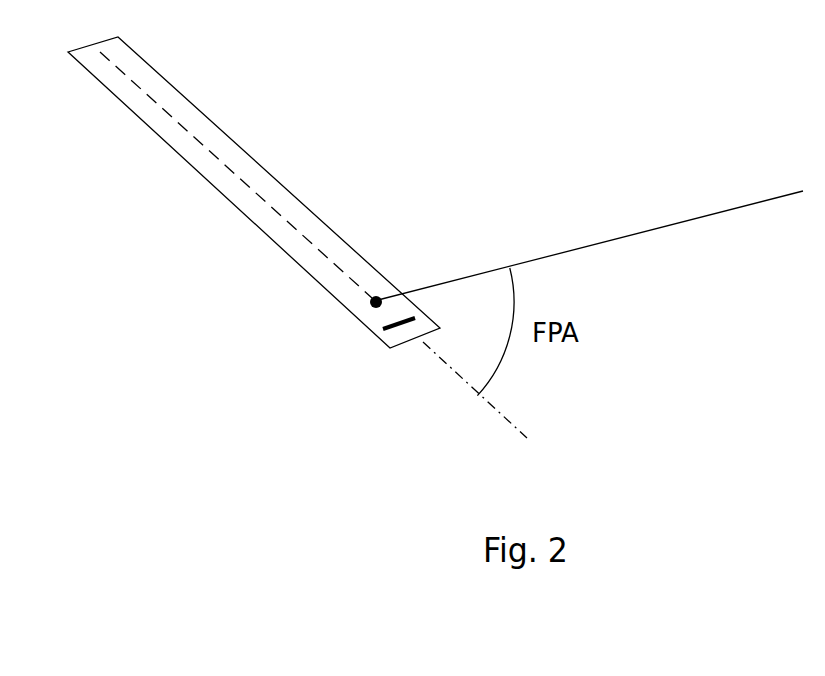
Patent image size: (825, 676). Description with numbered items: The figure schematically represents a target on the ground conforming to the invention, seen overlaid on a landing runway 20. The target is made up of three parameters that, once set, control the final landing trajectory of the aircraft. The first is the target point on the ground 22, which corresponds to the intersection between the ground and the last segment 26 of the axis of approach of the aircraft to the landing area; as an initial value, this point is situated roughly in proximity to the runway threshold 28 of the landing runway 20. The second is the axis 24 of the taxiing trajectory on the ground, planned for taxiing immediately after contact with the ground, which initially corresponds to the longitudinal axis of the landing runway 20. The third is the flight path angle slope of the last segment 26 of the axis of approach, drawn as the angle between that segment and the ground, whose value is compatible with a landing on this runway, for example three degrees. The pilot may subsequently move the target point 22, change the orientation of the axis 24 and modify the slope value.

The landing runway 20 is at (142, 68).
The target point on the ground 22 is at (353, 317).
The axis of the taxiing trajectory on the ground 24 is at (233, 172).
The last segment of the axis of approach 26 is at (662, 226).
The runway threshold 28 is at (397, 328).